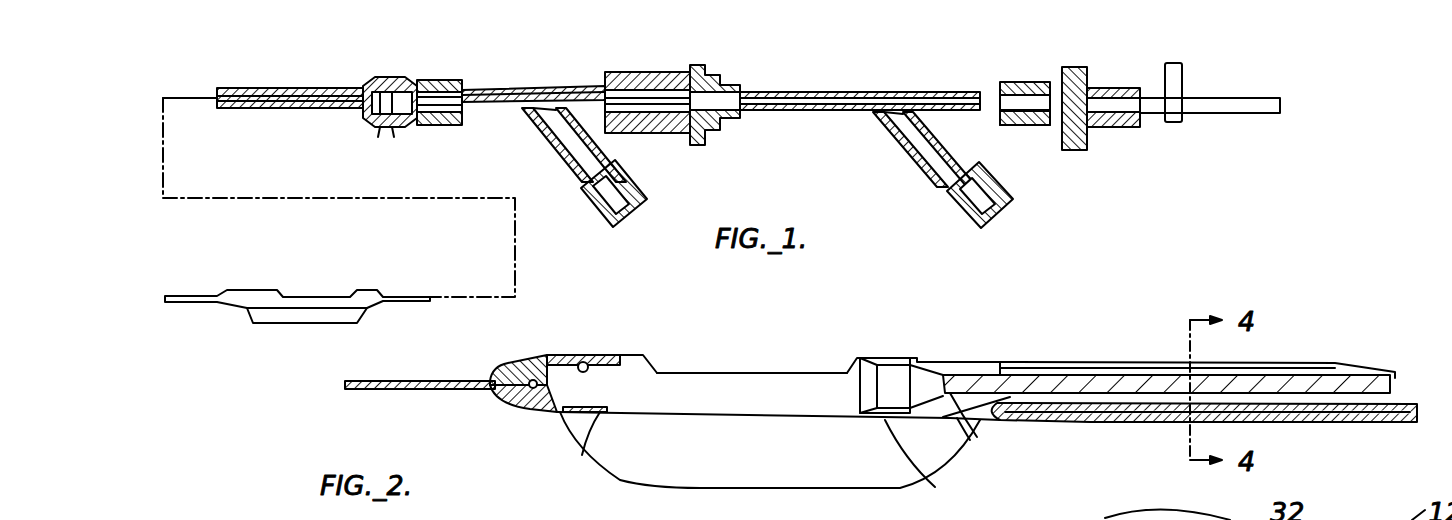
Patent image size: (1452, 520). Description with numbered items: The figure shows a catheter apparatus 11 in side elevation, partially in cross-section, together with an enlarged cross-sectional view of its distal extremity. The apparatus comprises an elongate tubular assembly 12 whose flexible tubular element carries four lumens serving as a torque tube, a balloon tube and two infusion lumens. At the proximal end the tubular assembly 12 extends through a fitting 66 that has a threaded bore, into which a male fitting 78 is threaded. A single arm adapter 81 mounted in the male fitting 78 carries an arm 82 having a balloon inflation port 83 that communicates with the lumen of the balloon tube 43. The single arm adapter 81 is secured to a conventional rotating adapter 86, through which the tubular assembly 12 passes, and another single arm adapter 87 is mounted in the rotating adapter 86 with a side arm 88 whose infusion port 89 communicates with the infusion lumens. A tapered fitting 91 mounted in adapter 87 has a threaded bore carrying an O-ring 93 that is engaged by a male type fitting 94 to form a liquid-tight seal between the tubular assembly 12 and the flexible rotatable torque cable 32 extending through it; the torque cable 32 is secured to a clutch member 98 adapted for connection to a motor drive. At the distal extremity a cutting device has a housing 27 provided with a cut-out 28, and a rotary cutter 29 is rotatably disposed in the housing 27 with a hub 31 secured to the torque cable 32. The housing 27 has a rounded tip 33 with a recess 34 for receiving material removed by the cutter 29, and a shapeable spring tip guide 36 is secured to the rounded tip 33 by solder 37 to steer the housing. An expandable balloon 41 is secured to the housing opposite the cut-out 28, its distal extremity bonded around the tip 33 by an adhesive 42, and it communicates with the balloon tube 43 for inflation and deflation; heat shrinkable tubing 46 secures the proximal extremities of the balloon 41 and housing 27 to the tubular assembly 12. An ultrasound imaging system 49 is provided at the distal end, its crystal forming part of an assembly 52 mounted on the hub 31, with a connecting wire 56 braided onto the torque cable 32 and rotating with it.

In FIG. 1, the catheter apparatus 11 is at (836, 28).
In FIG. 1, the elongate tubular assembly 12 is at (305, 68).
In FIG. 1, the fitting 66 is at (412, 77).
In FIG. 1, the male fitting 78 is at (466, 80).
In FIG. 1, the single arm adapter 81 is at (544, 87).
In FIG. 1, the arm 82 is at (545, 150).
In FIG. 1, the balloon inflation port 83 is at (632, 192).
In FIG. 1, the rotating adapter 86 is at (648, 72).
In FIG. 1, the single arm adapter 87 is at (903, 92).
In FIG. 1, the side arm 88 is at (906, 168).
In FIG. 1, the infusion port 89 is at (1000, 206).
In FIG. 1, the tapered fitting 91 is at (1008, 82).
In FIG. 1, the O-ring 93 is at (1020, 125).
In FIG. 1, the male type fitting 94 is at (1068, 67).
In FIG. 1, the torque cable 32 is at (1086, 80).
In FIG. 2, the torque cable 32 is at (983, 376).
In FIG. 1, the clutch member 98 is at (1226, 100).
In FIG. 1, the imaging system 49 is at (318, 272).
In FIG. 2, the imaging system 49 is at (801, 322).
In FIG. 2, the spring tip guide 36 is at (354, 390).
In FIG. 2, the solder 37 is at (536, 368).
In FIG. 2, the rounded tip 33 is at (523, 402).
In FIG. 2, the recess 34 is at (594, 358).
In FIG. 2, the cut-out 28 is at (658, 368).
In FIG. 2, the adhesive 42 is at (553, 414).
In FIG. 2, the housing 27 is at (590, 452).
In FIG. 2, the balloon 41 is at (776, 495).
In FIG. 2, the rotary cutter 29 is at (903, 487).
In FIG. 2, the hub 31 is at (958, 448).
In FIG. 2, the assembly 52 is at (940, 358).
In FIG. 2, the heat shrinkable tubing 46 is at (1058, 362).
In FIG. 2, the balloon tube 43 is at (1150, 410).
In FIG. 2, the connecting wire 56 is at (1160, 514).